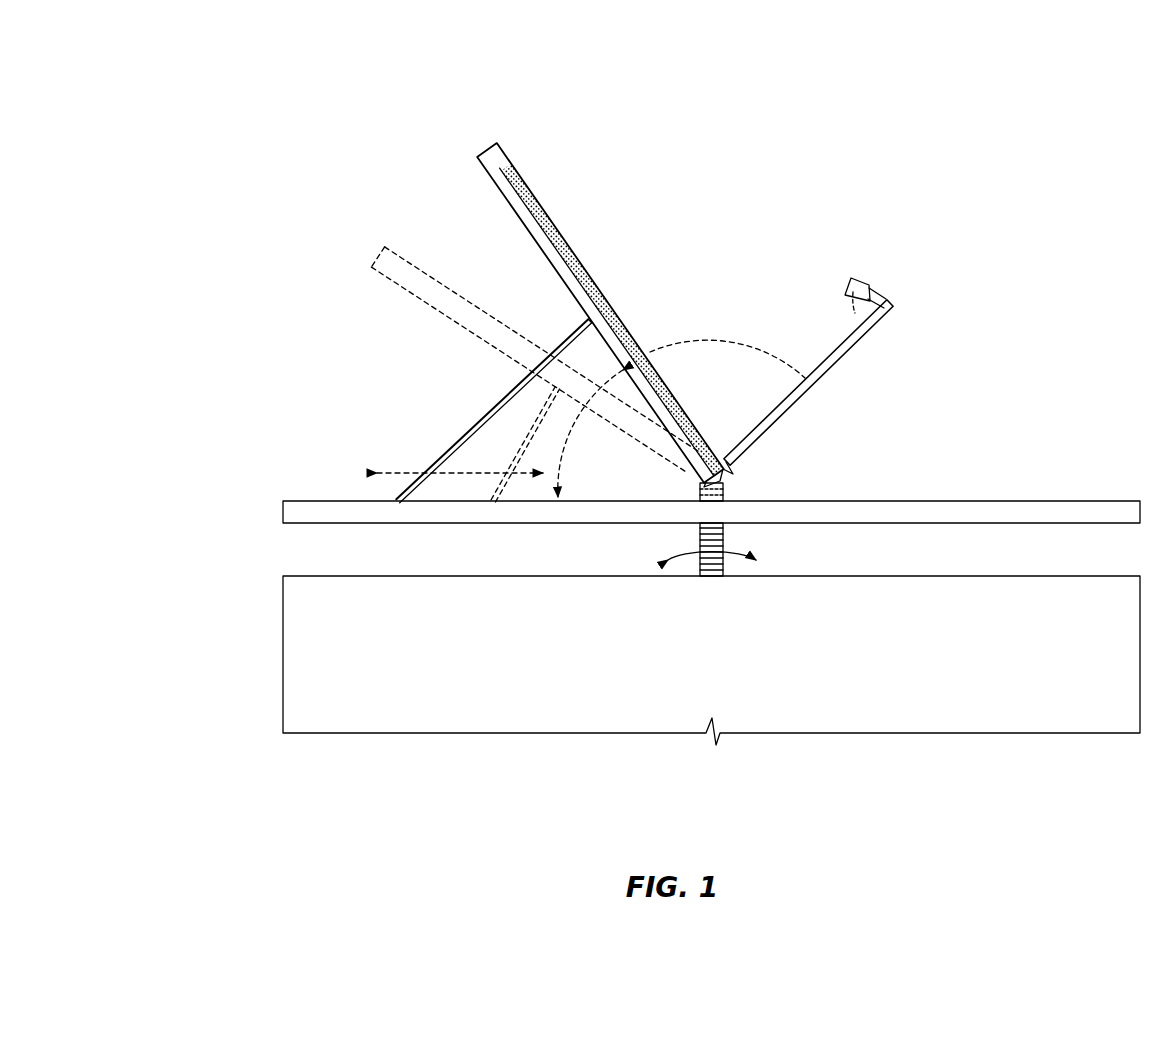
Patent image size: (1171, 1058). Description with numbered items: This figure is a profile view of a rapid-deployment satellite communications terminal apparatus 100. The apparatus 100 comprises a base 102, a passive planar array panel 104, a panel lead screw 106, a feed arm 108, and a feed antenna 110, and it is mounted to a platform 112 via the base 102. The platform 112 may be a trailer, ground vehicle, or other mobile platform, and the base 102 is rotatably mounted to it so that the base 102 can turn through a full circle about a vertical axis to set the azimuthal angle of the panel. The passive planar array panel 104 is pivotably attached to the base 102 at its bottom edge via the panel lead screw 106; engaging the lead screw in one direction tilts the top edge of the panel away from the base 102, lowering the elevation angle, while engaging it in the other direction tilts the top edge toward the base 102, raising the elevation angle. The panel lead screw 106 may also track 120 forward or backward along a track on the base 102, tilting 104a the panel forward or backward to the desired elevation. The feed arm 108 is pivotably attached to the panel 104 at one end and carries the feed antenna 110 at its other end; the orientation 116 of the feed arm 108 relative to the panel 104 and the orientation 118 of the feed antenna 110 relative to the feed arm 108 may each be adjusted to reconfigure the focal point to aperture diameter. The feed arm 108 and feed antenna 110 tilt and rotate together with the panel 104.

The satellite communications terminal apparatus 100 is at (313, 80).
The base 102 is at (1098, 508).
The passive planar array panel 104 is at (487, 160).
The tilting of the passive planar array panel 104a is at (438, 310).
The panel lead screw 106 is at (467, 442).
The feed arm 108 is at (832, 367).
The feed antenna 110 is at (865, 283).
The platform 112 is at (282, 653).
The orientation of the feed arm 116 is at (717, 337).
The orientation of the feed antenna 118 is at (850, 311).
The tracking of the panel lead screw 120 is at (410, 470).